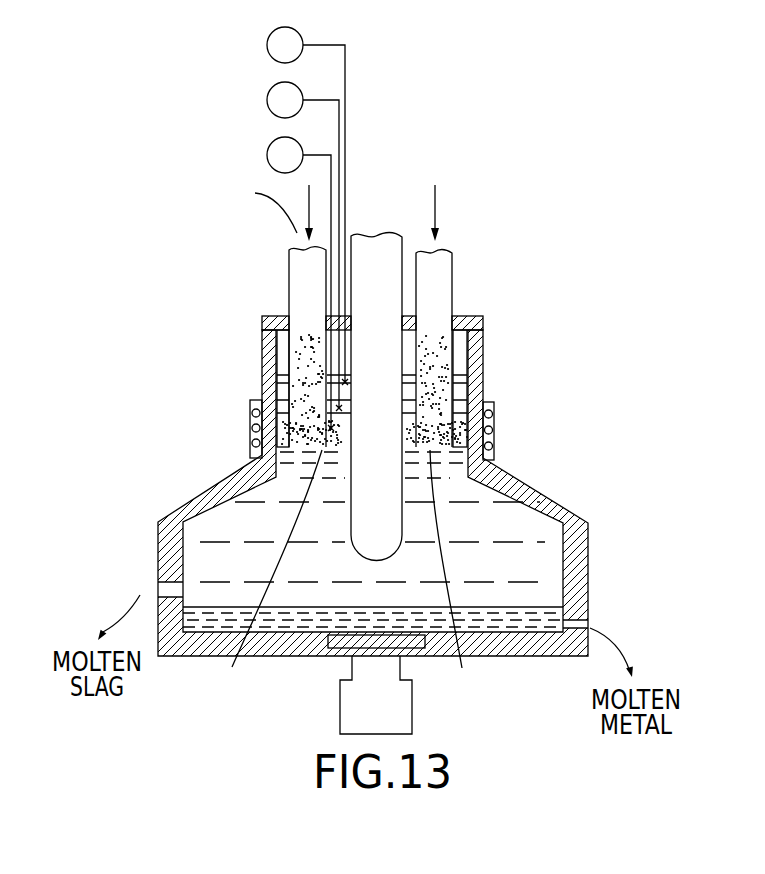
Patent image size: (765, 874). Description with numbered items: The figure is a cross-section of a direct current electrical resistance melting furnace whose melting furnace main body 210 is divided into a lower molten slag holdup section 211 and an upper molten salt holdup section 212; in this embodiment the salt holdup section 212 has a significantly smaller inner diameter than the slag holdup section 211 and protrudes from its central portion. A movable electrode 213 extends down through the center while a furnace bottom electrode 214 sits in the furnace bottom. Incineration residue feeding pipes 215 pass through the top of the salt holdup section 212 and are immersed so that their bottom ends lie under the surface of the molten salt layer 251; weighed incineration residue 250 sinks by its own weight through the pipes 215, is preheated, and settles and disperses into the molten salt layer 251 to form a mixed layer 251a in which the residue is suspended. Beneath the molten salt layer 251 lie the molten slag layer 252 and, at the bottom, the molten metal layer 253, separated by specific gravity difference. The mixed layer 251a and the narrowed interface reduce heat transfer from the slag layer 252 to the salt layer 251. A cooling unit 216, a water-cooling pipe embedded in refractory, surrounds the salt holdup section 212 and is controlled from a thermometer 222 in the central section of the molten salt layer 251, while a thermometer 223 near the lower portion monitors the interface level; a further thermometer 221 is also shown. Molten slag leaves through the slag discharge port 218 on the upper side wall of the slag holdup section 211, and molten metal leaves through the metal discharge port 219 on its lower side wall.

The melting furnace main body 210 is at (188, 478).
The molten slag holdup section 211 is at (157, 545).
The molten salt holdup section 212 is at (262, 353).
The movable electrode 213 is at (392, 270).
The furnace bottom electrode 214 is at (337, 646).
The incineration residue feeding pipes 215 is at (290, 277).
The cooling unit 216 is at (250, 413).
The slag discharge port 218 is at (165, 590).
The metal discharge port 219 is at (590, 618).
The first temperature sensor T1 221 is at (269, 34).
The thermometer 222 is at (269, 89).
The thermometer 223 is at (269, 144).
The incineration residue 250 is at (302, 353).
The molten salt layer 251 is at (483, 362).
The mixed layer 251a is at (350, 574).
The molten slag layer 252 is at (343, 573).
The molten metal layer 253 is at (507, 613).